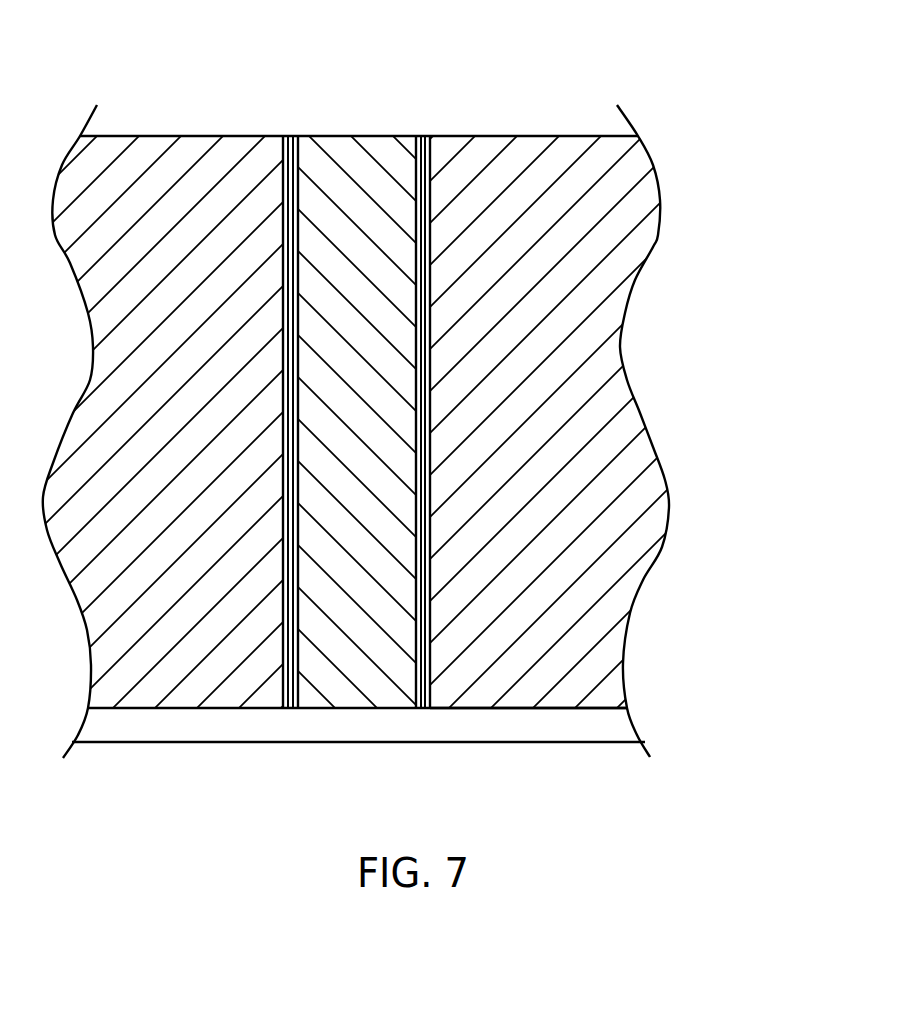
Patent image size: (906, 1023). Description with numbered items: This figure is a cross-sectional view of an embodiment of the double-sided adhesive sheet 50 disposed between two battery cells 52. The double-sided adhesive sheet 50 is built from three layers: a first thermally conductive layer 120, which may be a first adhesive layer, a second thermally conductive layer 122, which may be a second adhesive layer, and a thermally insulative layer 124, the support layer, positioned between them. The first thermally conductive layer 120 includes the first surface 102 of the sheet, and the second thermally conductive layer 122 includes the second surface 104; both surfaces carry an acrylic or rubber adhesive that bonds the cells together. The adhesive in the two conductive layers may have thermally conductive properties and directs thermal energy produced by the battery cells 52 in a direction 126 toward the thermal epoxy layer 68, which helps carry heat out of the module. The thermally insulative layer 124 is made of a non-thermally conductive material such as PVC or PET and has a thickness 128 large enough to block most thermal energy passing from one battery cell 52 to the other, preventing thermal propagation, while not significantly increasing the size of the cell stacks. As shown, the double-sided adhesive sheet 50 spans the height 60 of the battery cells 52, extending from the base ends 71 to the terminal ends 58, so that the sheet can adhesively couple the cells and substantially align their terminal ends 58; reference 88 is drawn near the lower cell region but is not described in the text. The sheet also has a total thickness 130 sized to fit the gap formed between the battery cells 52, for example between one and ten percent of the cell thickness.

The double-sided adhesive sheet 50 is at (344, 44).
The battery cell 52 is at (180, 162).
The terminal end 58 is at (152, 127).
The height 60 is at (683, 136).
The thermal epoxy layer 68 is at (563, 725).
The base end 71 is at (600, 722).
The bottom surface of electrode plate 88 is at (135, 714).
The first surface 102 is at (278, 615).
The second surface 104 is at (434, 608).
The first thermally conductive layer 120 is at (291, 136).
The second thermally conductive layer 122 is at (420, 136).
The thermally insulative layer 124 is at (313, 207).
The direction 126 is at (739, 560).
The thickness 128 is at (416, 714).
The total thickness 130 is at (283, 94).